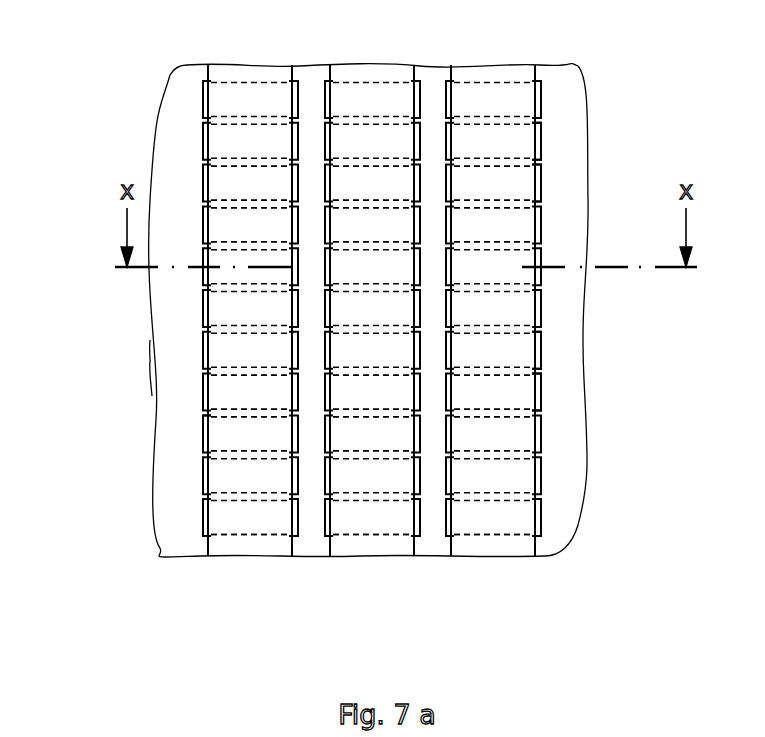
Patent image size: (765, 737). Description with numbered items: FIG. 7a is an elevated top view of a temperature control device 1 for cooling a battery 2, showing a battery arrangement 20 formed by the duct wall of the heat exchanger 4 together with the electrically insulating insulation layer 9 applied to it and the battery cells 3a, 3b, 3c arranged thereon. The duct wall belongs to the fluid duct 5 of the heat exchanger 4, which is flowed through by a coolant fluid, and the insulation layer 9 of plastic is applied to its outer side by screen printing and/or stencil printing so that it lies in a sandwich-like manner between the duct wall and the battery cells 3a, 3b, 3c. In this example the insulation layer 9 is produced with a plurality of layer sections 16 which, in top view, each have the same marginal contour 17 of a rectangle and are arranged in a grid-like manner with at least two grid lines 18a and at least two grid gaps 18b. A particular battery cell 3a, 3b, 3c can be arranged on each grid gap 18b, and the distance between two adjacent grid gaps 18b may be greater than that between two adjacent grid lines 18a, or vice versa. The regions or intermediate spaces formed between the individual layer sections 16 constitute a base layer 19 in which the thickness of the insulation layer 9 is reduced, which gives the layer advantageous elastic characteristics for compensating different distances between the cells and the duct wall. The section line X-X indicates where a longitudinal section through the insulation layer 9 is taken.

The temperature control device 1 is at (600, 528).
The battery 2 is at (182, 435).
The battery cell 3a is at (249, 72).
The battery cell 3b is at (370, 72).
The battery cell 3c is at (491, 72).
The heat exchanger 4 is at (160, 335).
The fluid duct 5 is at (146, 375).
The insulation layer 9 is at (184, 389).
The layer section 16 is at (537, 358).
The marginal contour 17 is at (541, 350).
The grid line 18a is at (563, 99).
The grid gap 18b is at (249, 577).
The base layer 19 is at (307, 80).
The battery arrangement 20 is at (598, 62).